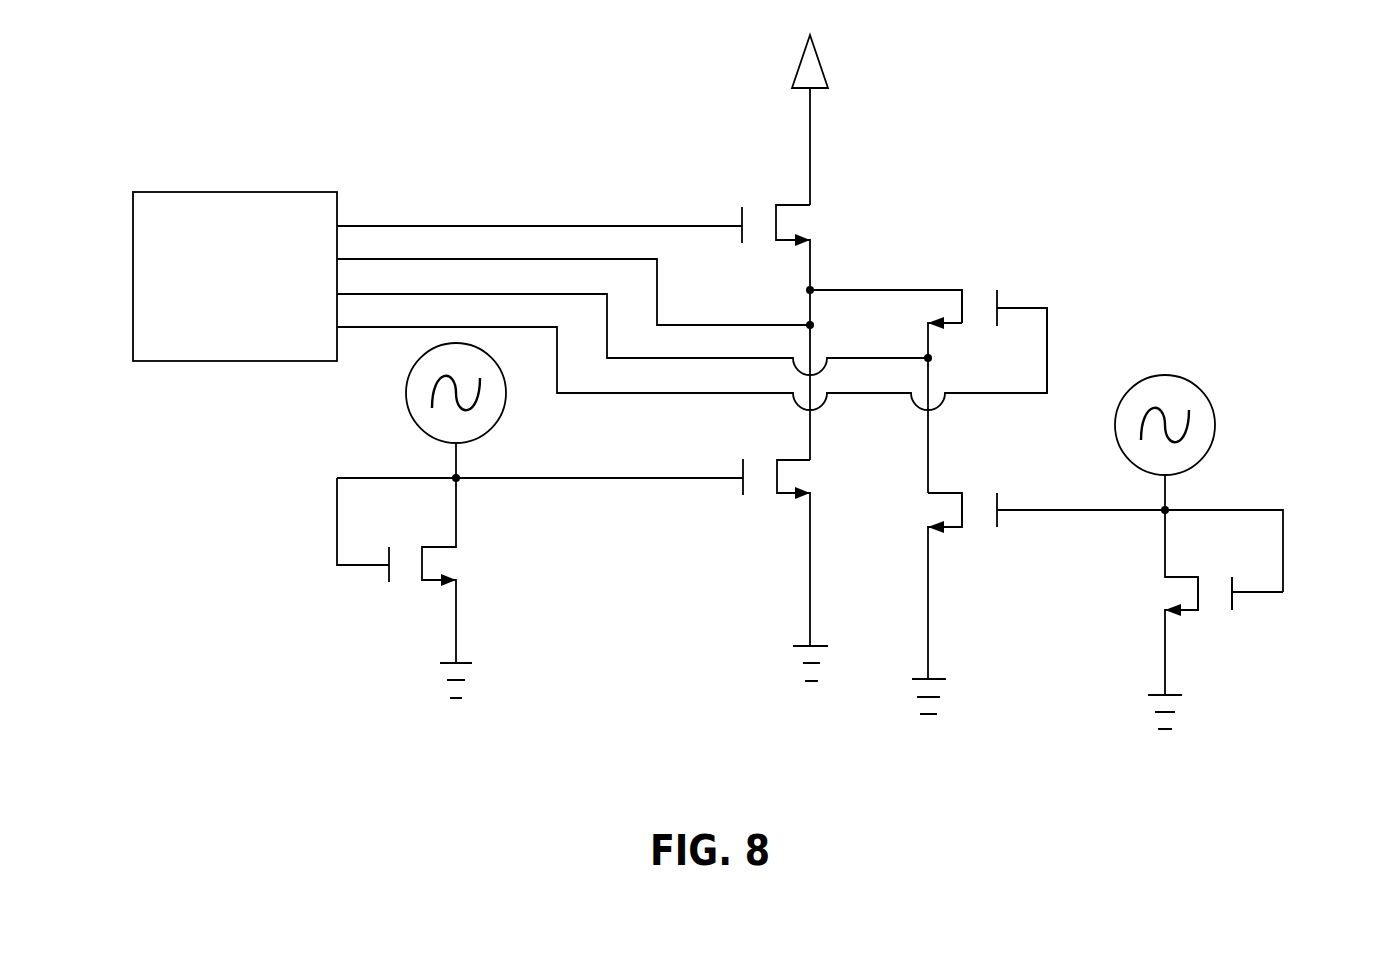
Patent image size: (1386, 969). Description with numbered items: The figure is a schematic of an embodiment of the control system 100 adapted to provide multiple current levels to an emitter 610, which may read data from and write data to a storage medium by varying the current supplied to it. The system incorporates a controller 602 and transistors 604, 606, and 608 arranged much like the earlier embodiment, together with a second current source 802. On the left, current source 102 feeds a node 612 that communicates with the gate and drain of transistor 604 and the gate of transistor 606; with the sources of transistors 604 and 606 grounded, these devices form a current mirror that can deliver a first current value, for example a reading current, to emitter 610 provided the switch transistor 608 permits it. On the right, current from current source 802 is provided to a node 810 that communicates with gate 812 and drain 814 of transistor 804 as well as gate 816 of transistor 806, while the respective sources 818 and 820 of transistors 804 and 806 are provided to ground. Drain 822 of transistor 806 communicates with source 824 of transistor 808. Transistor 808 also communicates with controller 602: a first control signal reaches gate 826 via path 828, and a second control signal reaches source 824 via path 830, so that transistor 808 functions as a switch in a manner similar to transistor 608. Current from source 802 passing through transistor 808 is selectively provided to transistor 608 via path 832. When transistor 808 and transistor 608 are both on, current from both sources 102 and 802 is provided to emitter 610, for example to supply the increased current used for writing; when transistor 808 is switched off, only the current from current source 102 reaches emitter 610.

The control system 100 is at (1170, 135).
The current source 102 is at (405, 393).
The controller 602 is at (183, 192).
The transistor 604 is at (368, 598).
The transistor 606 is at (718, 512).
The transistor 608 is at (718, 260).
The emitter 610 is at (815, 62).
The node 612 is at (462, 477).
The second current source 802 is at (1217, 425).
The transistor 804 is at (1255, 627).
The transistor 806 is at (1020, 546).
The transistor 808 is at (1020, 290).
The node 810 is at (1170, 508).
The gate 812 is at (1250, 592).
The drain 814 is at (1180, 577).
The gate 816 is at (1012, 508).
The source 818 is at (1180, 608).
The source 820 is at (945, 525).
The drain 822 is at (945, 490).
The source 824 is at (942, 320).
The gate 826 is at (1008, 308).
The path 828 is at (693, 393).
The path 830 is at (693, 358).
The path 832 is at (912, 290).